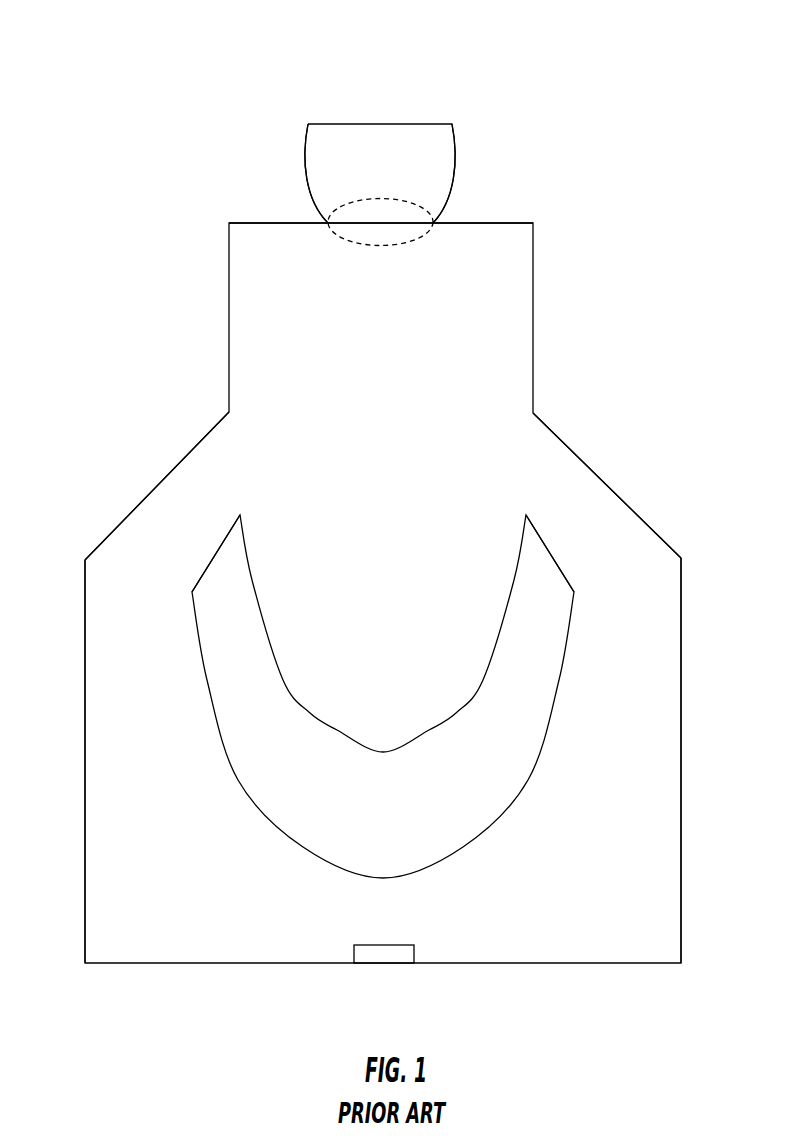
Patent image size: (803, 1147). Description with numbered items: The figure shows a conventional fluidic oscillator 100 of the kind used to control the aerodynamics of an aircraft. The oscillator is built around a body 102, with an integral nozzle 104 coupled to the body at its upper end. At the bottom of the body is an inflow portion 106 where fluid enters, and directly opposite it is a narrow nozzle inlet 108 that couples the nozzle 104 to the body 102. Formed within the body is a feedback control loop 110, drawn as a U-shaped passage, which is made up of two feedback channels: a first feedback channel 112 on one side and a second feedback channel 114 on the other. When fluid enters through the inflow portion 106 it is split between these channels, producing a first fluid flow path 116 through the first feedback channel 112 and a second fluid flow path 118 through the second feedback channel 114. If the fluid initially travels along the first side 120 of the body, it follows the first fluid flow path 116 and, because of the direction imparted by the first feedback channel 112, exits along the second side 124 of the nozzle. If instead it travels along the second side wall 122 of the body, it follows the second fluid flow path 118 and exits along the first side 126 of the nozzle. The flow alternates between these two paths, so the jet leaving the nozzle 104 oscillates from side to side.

The fluidic oscillator 100 is at (592, 98).
The body 102 is at (534, 280).
The nozzle 104 is at (455, 133).
The inflow portion 106 is at (384, 953).
The narrow nozzle inlet 108 is at (393, 247).
The feedback control loop 110 is at (244, 504).
The first feedback channel 112 is at (210, 427).
The second feedback channel 114 is at (573, 462).
The first fluid flow path 116 is at (218, 510).
The second fluid flow path 118 is at (571, 509).
The first side of the body 120 is at (84, 605).
The second side wall of the body 122 is at (682, 803).
The second side of the nozzle 124 is at (458, 166).
The first side of the nozzle 126 is at (303, 163).